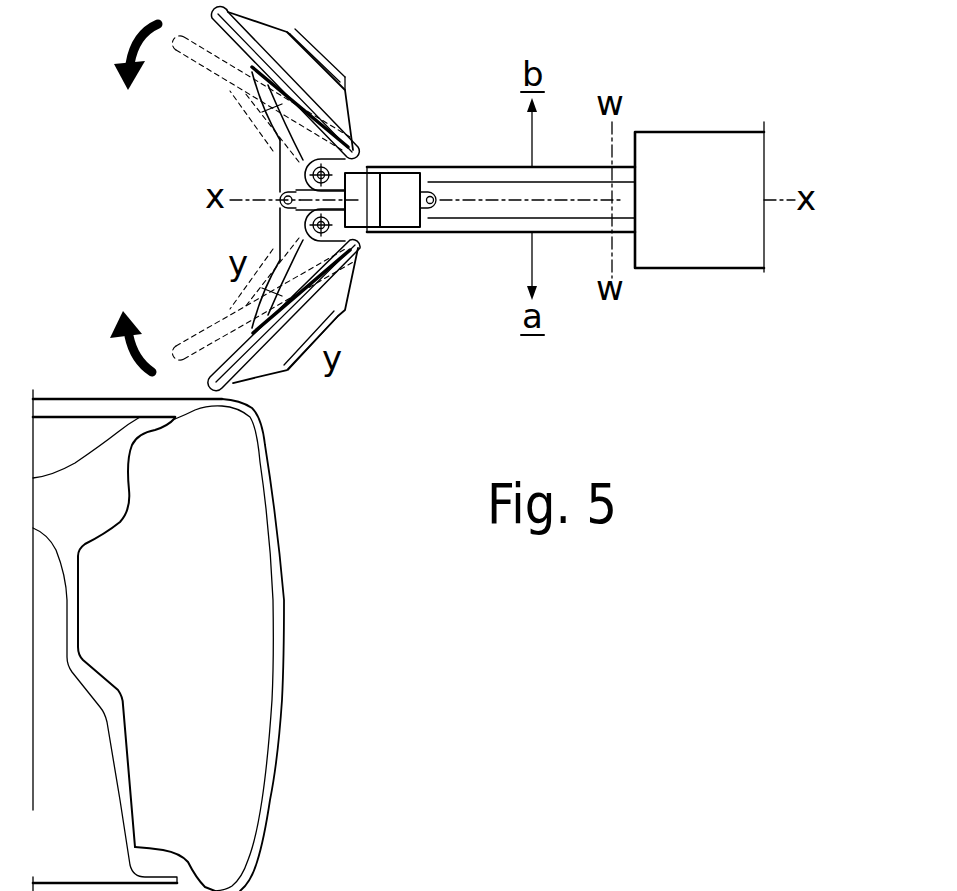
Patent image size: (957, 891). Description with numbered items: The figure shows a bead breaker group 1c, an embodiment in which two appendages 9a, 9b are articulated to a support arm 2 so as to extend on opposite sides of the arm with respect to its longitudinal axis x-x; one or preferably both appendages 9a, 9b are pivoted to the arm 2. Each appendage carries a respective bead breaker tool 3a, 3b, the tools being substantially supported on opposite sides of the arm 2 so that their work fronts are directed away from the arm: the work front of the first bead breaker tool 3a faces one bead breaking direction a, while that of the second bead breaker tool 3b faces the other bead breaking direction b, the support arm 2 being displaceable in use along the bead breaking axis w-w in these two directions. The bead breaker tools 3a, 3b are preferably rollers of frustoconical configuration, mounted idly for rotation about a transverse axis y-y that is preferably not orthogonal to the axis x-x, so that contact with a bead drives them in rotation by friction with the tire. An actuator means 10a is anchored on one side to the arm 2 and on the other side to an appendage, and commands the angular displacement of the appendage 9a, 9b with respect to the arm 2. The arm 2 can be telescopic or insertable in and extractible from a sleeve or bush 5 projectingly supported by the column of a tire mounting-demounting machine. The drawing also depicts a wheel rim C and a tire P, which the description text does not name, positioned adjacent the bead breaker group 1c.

The support arm 2 is at (460, 233).
The sleeve or bush 5 is at (685, 268).
The actuator means 10a is at (397, 227).
The appendage 9a is at (300, 135).
The appendage 9b is at (297, 263).
The second bead breaker tool 3b is at (348, 103).
The first bead breaker tool 3a is at (268, 378).
The bead breaker group 1c is at (425, 343).
The wheel rim C is at (115, 398).
The tire P is at (283, 577).